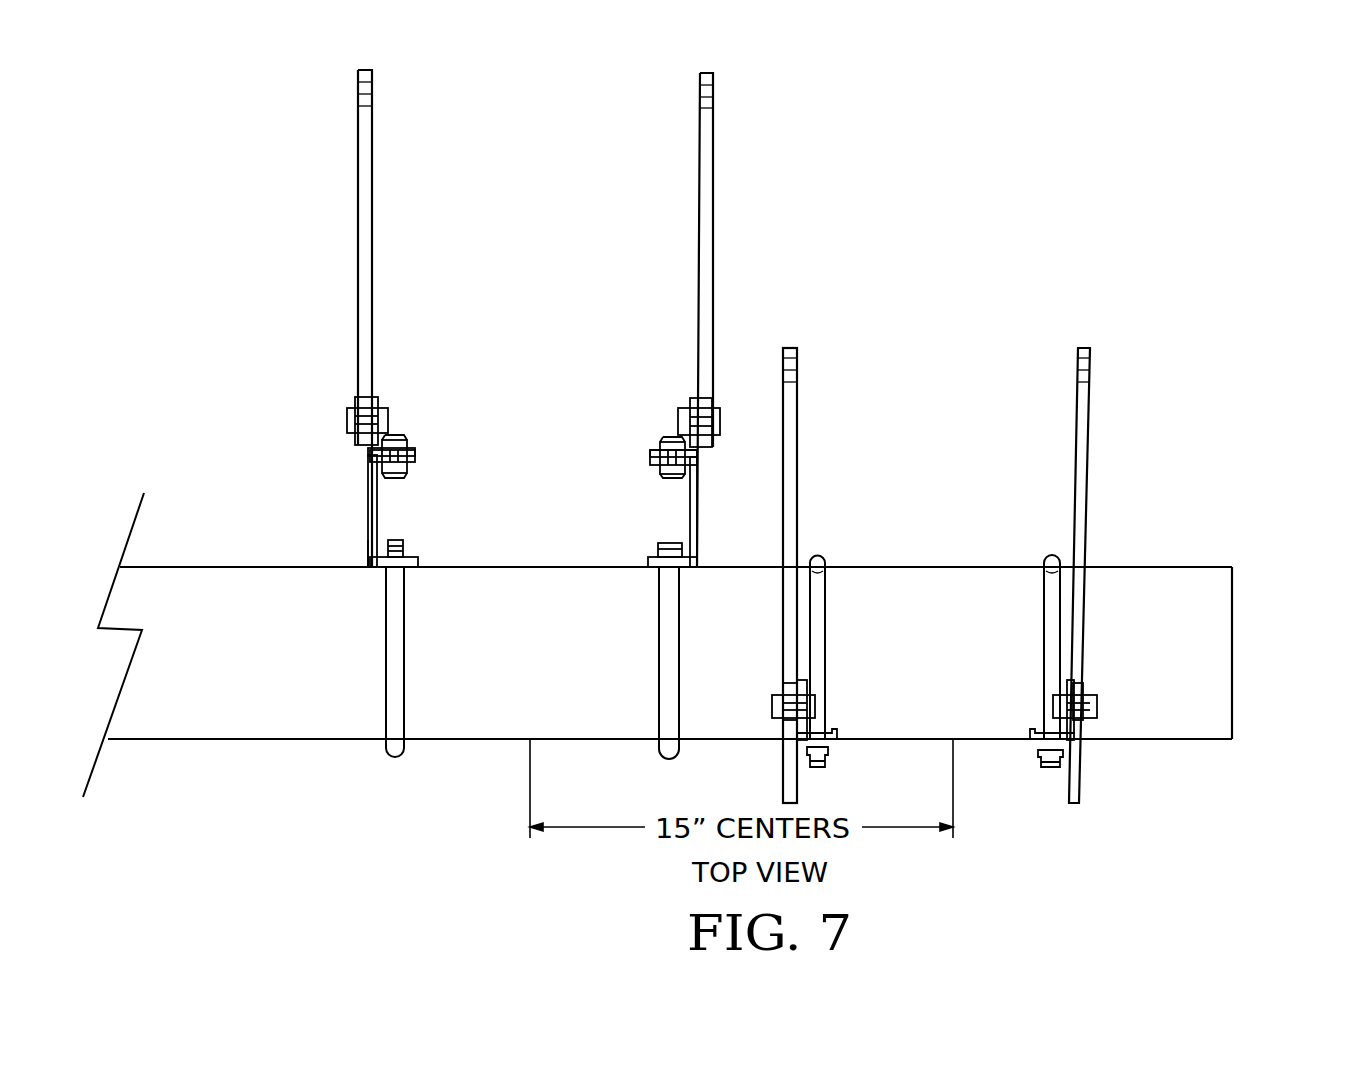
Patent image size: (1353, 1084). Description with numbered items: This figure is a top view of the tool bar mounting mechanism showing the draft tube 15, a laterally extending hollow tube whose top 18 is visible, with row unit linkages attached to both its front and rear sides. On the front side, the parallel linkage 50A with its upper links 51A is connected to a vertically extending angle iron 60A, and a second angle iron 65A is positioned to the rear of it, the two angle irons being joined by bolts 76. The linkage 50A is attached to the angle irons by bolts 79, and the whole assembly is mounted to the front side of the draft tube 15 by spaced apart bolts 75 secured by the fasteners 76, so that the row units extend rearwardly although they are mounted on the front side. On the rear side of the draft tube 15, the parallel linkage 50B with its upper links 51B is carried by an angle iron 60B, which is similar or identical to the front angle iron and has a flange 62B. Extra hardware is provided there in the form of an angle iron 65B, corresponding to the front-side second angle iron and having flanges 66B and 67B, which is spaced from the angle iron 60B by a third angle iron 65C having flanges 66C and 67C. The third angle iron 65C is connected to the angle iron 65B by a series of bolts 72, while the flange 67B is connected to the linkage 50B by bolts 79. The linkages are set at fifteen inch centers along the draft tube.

The draft tube 15 is at (1225, 560).
The top 18 is at (1186, 617).
The parallel linkage 50A is at (799, 438).
The parallel linkage 50B is at (374, 185).
The upper links 51A is at (795, 480).
The upper links 51B is at (365, 135).
The angle iron 60A is at (1103, 773).
The angle iron 60B is at (365, 558).
The flange 62B is at (373, 517).
The angle iron 65A is at (1075, 690).
The angle iron 65B is at (380, 400).
The third angle iron 65C is at (421, 455).
The flange 66B is at (652, 447).
The flange 66C is at (652, 467).
The angle iron flange 67B is at (690, 400).
The flange 67C is at (698, 495).
The bolts 72 is at (396, 438).
The bolts 75 is at (400, 652).
The fasteners 76 is at (413, 558).
The bolts 79 is at (347, 420).